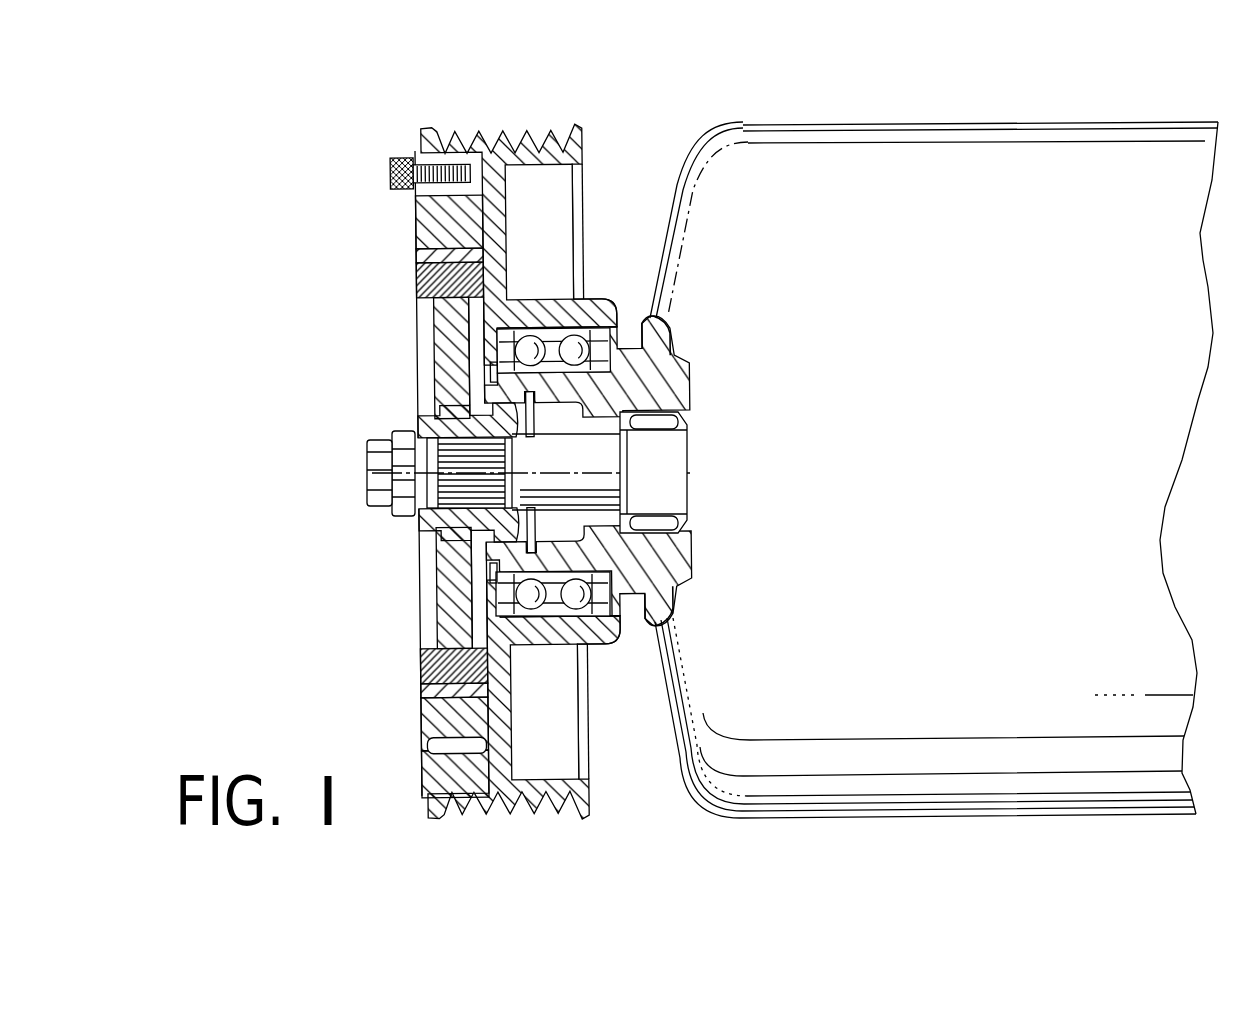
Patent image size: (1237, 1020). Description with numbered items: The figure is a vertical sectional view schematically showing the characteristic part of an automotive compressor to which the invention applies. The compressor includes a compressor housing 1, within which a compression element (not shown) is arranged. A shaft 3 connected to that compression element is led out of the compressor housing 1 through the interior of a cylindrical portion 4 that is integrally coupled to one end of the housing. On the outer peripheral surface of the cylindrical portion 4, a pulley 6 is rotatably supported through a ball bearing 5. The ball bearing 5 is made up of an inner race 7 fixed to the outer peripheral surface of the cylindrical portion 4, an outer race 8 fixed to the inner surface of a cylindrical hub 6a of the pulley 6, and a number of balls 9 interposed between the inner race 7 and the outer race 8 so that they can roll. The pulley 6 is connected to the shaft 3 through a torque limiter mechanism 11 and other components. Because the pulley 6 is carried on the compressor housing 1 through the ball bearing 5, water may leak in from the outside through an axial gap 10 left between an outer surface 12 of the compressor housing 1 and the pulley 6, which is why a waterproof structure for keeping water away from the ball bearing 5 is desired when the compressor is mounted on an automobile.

The compressor housing 1 is at (790, 138).
The shaft 3 is at (651, 628).
The cylindrical portion 4 is at (620, 372).
The ball bearing 5 is at (584, 326).
The pulley 6 is at (430, 130).
The cylindrical hub 6a is at (579, 315).
The inner race 7 is at (610, 612).
The outer race 8 is at (583, 607).
The balls 9 is at (598, 620).
The axial gap 10 is at (652, 318).
The torque limiter mechanism 11 is at (410, 283).
The outer surface 12 is at (673, 208).